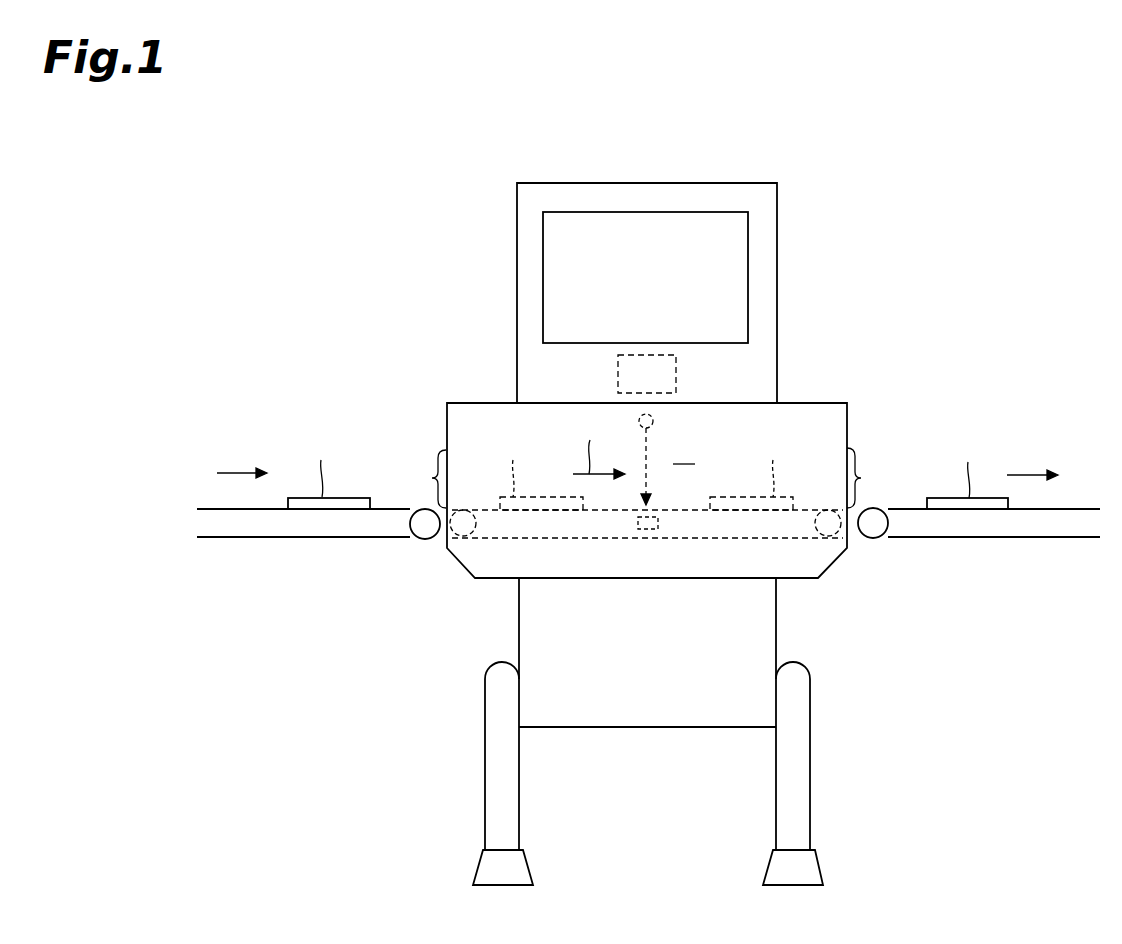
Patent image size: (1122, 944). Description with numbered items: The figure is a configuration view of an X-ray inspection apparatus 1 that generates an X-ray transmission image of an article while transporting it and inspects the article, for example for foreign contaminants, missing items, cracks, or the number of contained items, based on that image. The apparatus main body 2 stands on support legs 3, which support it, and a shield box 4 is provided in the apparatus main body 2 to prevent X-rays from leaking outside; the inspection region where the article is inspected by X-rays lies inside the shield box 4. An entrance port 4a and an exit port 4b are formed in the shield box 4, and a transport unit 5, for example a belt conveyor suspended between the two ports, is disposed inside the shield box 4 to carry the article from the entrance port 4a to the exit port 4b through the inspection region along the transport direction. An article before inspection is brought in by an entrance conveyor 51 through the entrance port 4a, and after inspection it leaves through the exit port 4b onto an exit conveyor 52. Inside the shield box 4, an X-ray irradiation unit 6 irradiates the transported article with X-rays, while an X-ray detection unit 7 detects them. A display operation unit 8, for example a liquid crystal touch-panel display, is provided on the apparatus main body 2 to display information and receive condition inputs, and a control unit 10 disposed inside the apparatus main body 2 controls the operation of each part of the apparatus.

The X-ray inspection apparatus 1 is at (863, 147).
The apparatus main body 2 is at (517, 240).
The support legs 3 is at (485, 771).
The shield box 4 is at (848, 418).
The entrance port 4a is at (420, 479).
The exit port 4b is at (873, 478).
The transport unit 5 is at (508, 530).
The X-ray irradiation unit 6 is at (655, 417).
The X-ray detection unit 7 is at (660, 523).
The display operation unit 8 is at (748, 297).
The control unit 10 is at (618, 378).
The entrance conveyor 51 is at (283, 537).
The exit conveyor 52 is at (1051, 537).